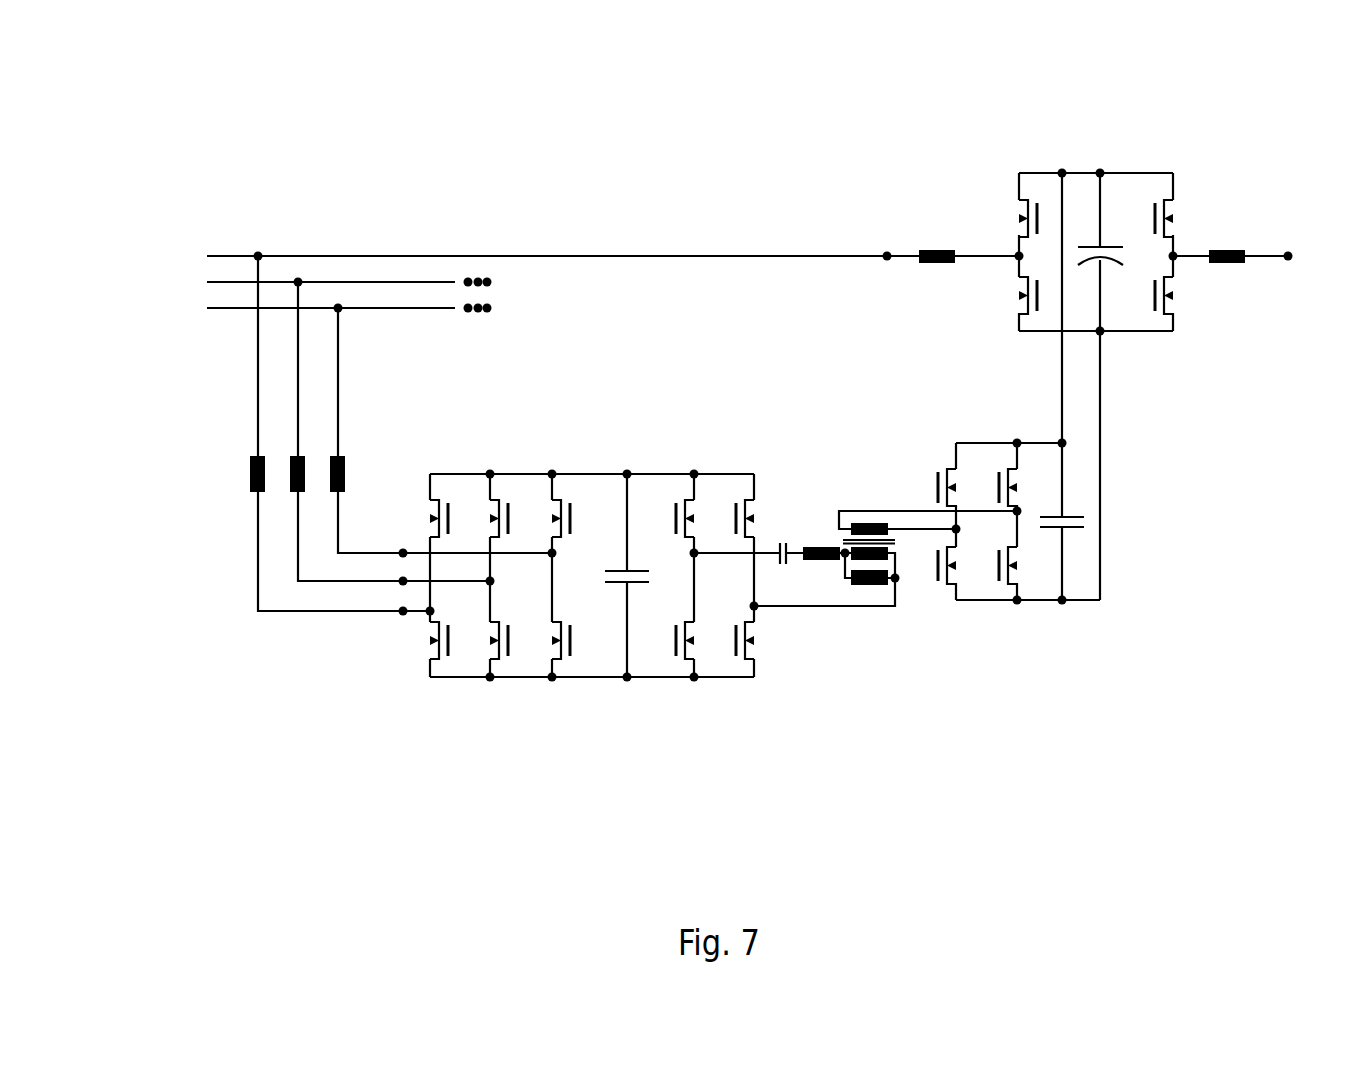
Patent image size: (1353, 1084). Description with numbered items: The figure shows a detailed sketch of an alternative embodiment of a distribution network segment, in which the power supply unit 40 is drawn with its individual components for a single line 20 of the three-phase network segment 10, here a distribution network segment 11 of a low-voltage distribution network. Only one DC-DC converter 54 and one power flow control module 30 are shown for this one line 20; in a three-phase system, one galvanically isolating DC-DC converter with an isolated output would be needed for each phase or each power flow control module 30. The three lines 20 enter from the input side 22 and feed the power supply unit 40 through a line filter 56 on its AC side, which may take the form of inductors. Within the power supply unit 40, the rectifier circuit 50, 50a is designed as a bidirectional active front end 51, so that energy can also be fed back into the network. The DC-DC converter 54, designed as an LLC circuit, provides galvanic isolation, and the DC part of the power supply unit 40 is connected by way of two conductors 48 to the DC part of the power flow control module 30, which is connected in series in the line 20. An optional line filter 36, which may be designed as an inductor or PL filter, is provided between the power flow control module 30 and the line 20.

The network segment 10 is at (540, 111).
The distribution network segment 11 is at (577, 111).
The line 20 is at (464, 256).
The input side 22 is at (182, 276).
The power flow control module 30 is at (1120, 130).
The line filter 36 is at (1100, 413).
The power supply unit 40 is at (615, 747).
The conductor 48 is at (1062, 410).
The rectifier circuit 50 is at (600, 688).
The active rectifier 50a is at (539, 575).
The bidirectional active front end 51 is at (539, 575).
The DC-DC converter 54 is at (1030, 688).
The line filter 56 is at (250, 468).